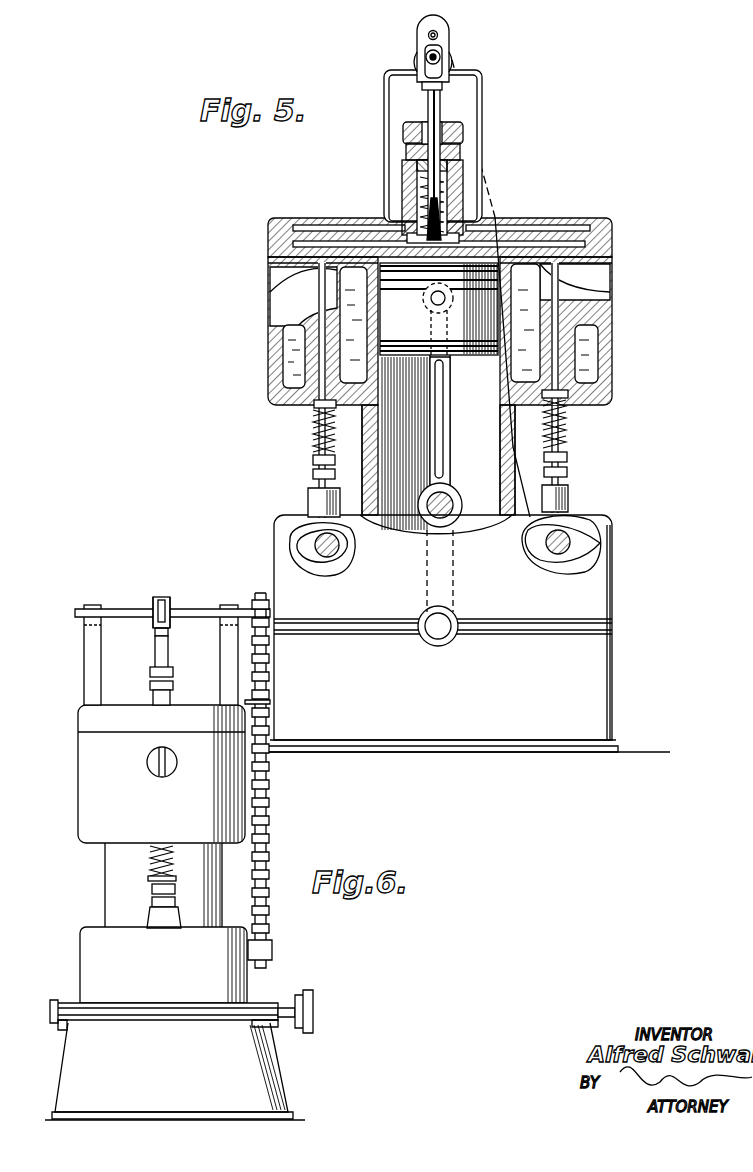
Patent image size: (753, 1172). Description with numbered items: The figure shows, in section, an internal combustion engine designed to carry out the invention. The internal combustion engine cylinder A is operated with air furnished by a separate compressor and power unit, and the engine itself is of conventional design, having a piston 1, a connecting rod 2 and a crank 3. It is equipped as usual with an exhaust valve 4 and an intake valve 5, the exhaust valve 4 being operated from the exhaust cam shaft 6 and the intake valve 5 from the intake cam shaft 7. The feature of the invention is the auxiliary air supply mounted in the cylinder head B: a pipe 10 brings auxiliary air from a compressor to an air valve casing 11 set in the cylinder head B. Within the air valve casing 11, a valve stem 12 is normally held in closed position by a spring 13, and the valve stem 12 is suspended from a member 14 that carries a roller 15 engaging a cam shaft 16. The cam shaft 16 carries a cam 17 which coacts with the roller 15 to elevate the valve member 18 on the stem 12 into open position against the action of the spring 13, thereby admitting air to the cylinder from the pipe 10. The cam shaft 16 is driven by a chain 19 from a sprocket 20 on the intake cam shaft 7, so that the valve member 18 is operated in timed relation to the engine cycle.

In FIG. 5, the piston 1 is at (466, 360).
In FIG. 5, the connecting rod 2 is at (446, 440).
In FIG. 5, the crank 3 is at (454, 584).
In FIG. 5, the exhaust valve 4 is at (290, 282).
In FIG. 5, the intake valve 5 is at (575, 264).
In FIG. 5, the exhaust cam shaft 6 is at (330, 560).
In FIG. 5, the intake cam shaft 7 is at (557, 554).
In FIG. 6, the pipe 10 is at (207, 706).
In FIG. 5, the air valve casing 11 is at (403, 192).
In FIG. 6, the air valve casing 11 is at (174, 682).
In FIG. 5, the valve stem 12 is at (441, 110).
In FIG. 6, the valve stem 12 is at (168, 652).
In FIG. 5, the spring 13 is at (464, 163).
In FIG. 5, the member 14 is at (458, 68).
In FIG. 6, the member 14 is at (154, 630).
In FIG. 5, the roller 15 is at (428, 34).
In FIG. 6, the roller 15 is at (164, 598).
In FIG. 5, the cam shaft 16 is at (440, 55).
In FIG. 6, the cam shaft 16 is at (198, 608).
In FIG. 5, the cam 17 is at (426, 57).
In FIG. 6, the cam 17 is at (169, 630).
In FIG. 5, the valve member 18 is at (420, 203).
In FIG. 5, the chain 19 is at (490, 193).
In FIG. 6, the chain 19 is at (268, 820).
In FIG. 5, the sprocket 20 is at (574, 560).
In FIG. 6, the sprocket 20 is at (262, 967).
In FIG. 5, the internal combustion engine cylinder A is at (513, 440).
In FIG. 6, the internal combustion engine cylinder A is at (203, 896).
In FIG. 5, the cylinder head B is at (270, 218).